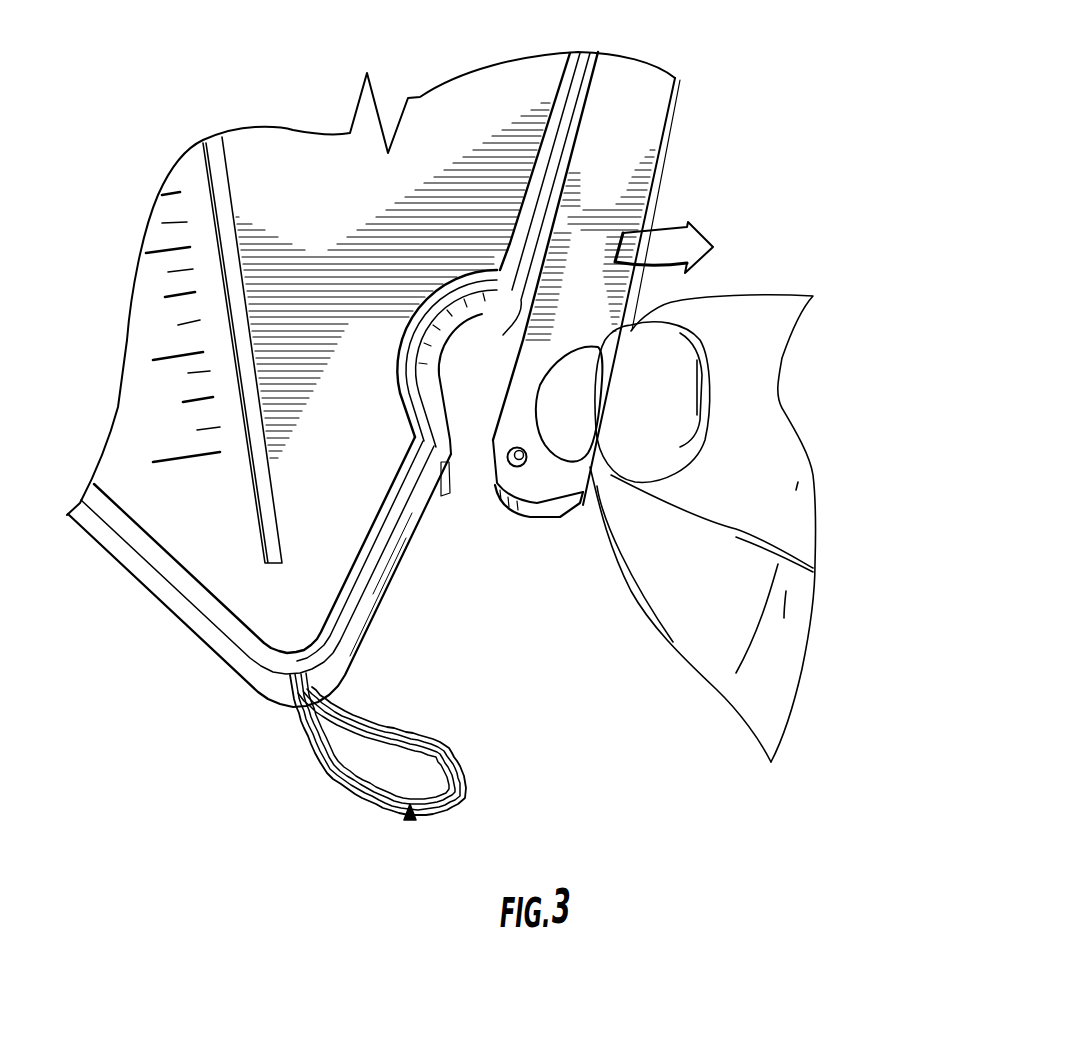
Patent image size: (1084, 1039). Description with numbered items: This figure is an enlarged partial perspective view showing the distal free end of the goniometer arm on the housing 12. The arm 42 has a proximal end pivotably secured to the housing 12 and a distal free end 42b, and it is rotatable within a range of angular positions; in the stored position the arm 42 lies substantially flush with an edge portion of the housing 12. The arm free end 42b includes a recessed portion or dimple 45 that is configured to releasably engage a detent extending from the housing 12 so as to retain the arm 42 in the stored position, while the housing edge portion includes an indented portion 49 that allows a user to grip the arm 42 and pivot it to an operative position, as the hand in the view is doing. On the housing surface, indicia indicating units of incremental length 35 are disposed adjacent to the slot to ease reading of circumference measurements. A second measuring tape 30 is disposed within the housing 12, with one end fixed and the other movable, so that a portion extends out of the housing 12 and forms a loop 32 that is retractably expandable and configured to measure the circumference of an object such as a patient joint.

The housing 12 is at (130, 437).
The indicia indicating units of incremental length 35 is at (165, 357).
The indented portion 49 is at (427, 413).
The arm 42 is at (640, 117).
The distal free end 42b is at (557, 480).
The recessed portion or dimple 45 is at (527, 462).
The second measuring tape 30 is at (463, 762).
The loop 32 is at (407, 816).